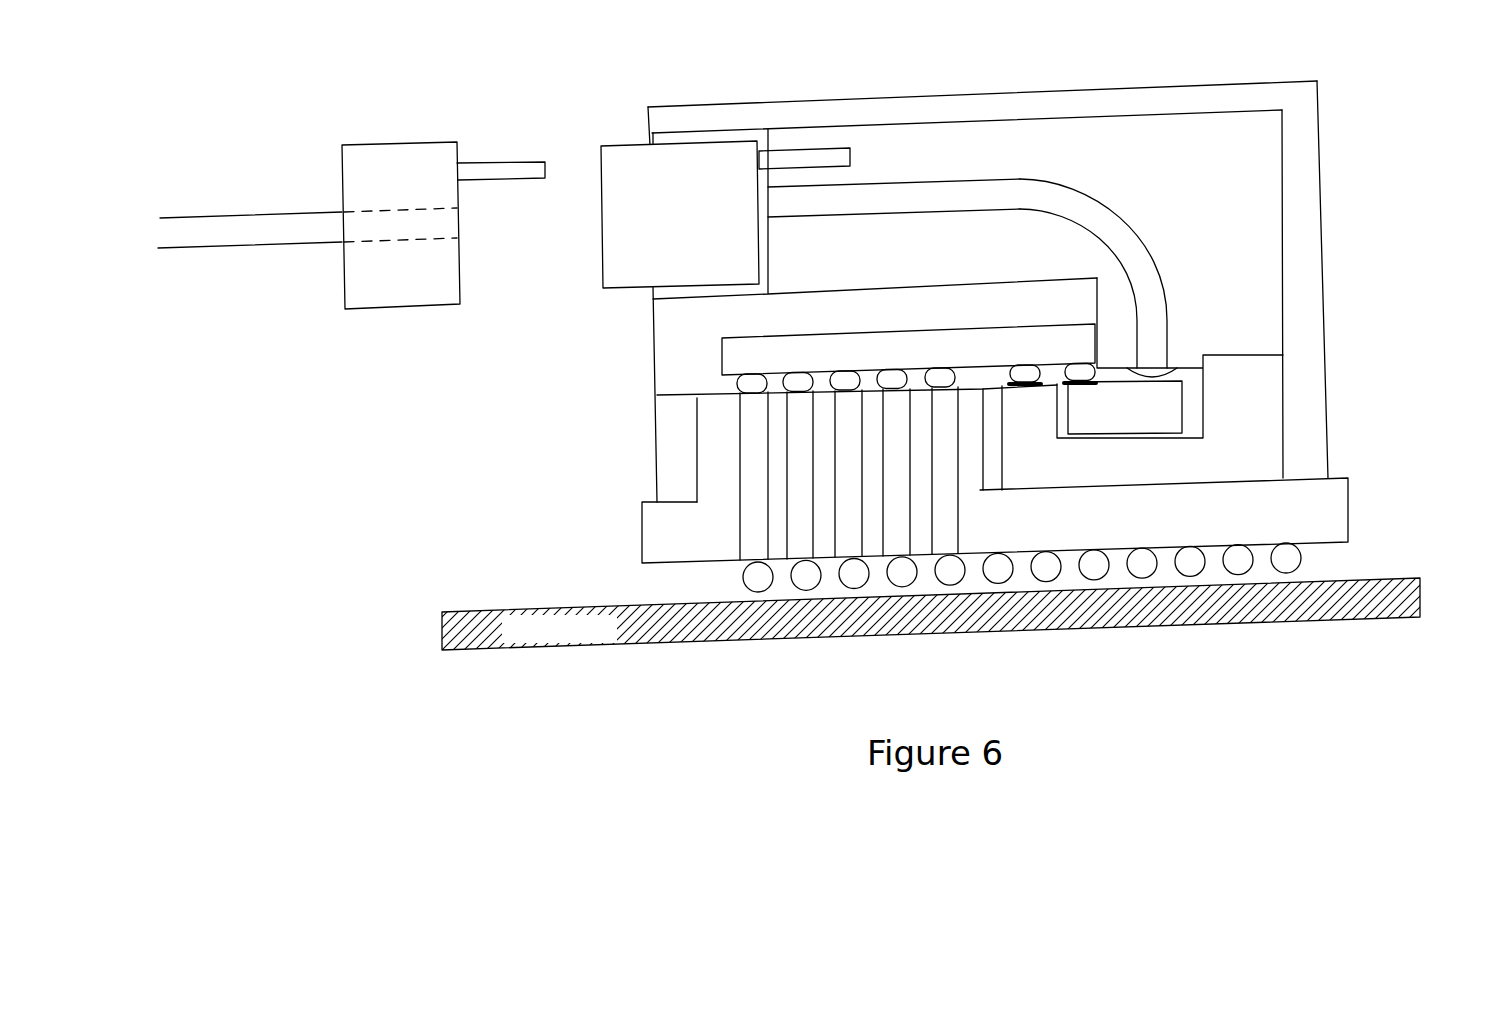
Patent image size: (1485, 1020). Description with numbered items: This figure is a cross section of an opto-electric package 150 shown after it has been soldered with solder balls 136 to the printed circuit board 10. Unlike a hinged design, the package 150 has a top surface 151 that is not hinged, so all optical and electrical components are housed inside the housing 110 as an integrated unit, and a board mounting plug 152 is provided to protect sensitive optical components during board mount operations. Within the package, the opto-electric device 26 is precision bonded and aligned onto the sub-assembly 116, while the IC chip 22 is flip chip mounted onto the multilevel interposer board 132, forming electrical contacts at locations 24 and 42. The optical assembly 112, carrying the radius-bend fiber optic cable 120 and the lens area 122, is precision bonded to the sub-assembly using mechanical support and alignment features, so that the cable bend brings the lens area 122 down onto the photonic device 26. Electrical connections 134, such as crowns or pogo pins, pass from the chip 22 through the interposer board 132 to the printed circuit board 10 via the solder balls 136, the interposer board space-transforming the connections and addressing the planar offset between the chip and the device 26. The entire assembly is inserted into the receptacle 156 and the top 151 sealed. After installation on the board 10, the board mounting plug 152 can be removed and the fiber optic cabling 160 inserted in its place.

The printed circuit board 10 is at (440, 626).
The IC chip 22 is at (925, 362).
The electrical contact locations 24 is at (657, 392).
The opto-electric device 26 is at (1142, 423).
The electrical connections 42 is at (1078, 368).
The housing 110 is at (1056, 260).
The optical assembly 112 is at (894, 178).
The sub-assembly 116 is at (1150, 469).
The fiber optic cable 120 is at (1090, 212).
The lens area 122 is at (1175, 362).
The interposer board 132 is at (678, 480).
The electrical connections 134 is at (755, 452).
The solder balls 136 is at (740, 571).
The package 150 is at (541, 716).
The top surface 151 is at (1110, 100).
The board mounting plug 152 is at (623, 143).
The receptacle 156 is at (1328, 305).
The fiber optic cabling 160 is at (405, 309).